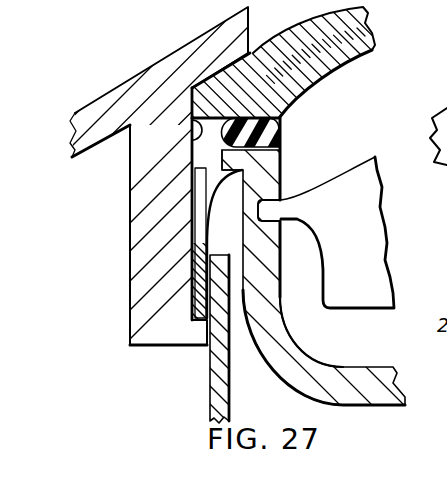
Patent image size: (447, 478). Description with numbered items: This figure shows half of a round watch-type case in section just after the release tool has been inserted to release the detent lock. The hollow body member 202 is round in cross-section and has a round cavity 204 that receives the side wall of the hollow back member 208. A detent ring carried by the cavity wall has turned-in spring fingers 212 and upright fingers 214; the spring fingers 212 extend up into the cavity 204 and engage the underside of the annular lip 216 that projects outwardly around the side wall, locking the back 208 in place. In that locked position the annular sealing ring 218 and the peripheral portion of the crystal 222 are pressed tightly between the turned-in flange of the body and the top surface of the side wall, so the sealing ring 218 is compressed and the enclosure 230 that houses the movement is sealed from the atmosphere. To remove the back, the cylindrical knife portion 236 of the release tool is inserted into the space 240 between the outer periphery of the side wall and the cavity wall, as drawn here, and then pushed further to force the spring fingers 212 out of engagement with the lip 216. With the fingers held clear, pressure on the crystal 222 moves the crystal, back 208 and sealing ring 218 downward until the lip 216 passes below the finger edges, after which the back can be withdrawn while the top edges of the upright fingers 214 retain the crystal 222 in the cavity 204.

The hollow body member 202 is at (129, 311).
The cavity 204 is at (190, 117).
The hollow back member 208 is at (339, 407).
The turned-in spring fingers 212 is at (268, 166).
The upright fingers 214 is at (203, 181).
The annular lip 216 is at (235, 158).
The annular sealing ring 218 is at (278, 122).
The crystal 222 is at (345, 42).
The enclosure 230 is at (375, 344).
The knife portion 236 is at (222, 382).
The space 240 is at (217, 228).